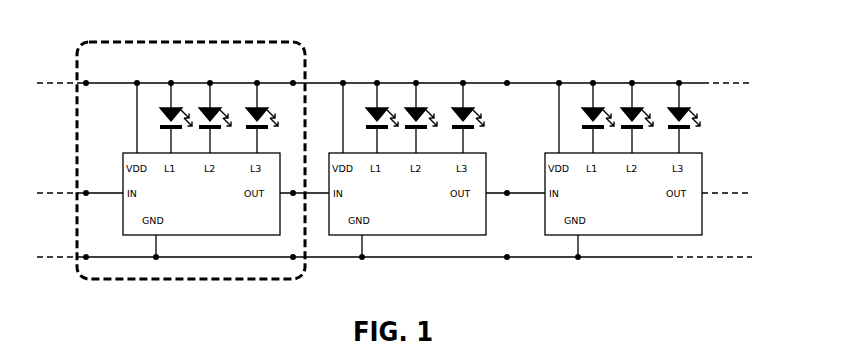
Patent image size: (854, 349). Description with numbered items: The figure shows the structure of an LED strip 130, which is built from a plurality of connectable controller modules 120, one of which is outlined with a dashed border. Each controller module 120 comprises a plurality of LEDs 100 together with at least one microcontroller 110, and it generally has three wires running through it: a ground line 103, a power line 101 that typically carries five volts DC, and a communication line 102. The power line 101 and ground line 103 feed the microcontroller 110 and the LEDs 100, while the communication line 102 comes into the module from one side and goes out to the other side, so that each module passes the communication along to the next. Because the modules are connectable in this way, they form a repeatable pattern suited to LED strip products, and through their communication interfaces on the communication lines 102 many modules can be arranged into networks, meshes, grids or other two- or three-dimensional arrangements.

The LED 100 is at (173, 110).
The power line 101 is at (102, 82).
The communication line 102 is at (90, 191).
The ground line 103 is at (89, 256).
The microcontroller 110 is at (198, 235).
The controller module 120 is at (302, 42).
The LED strip 130 is at (385, 39).